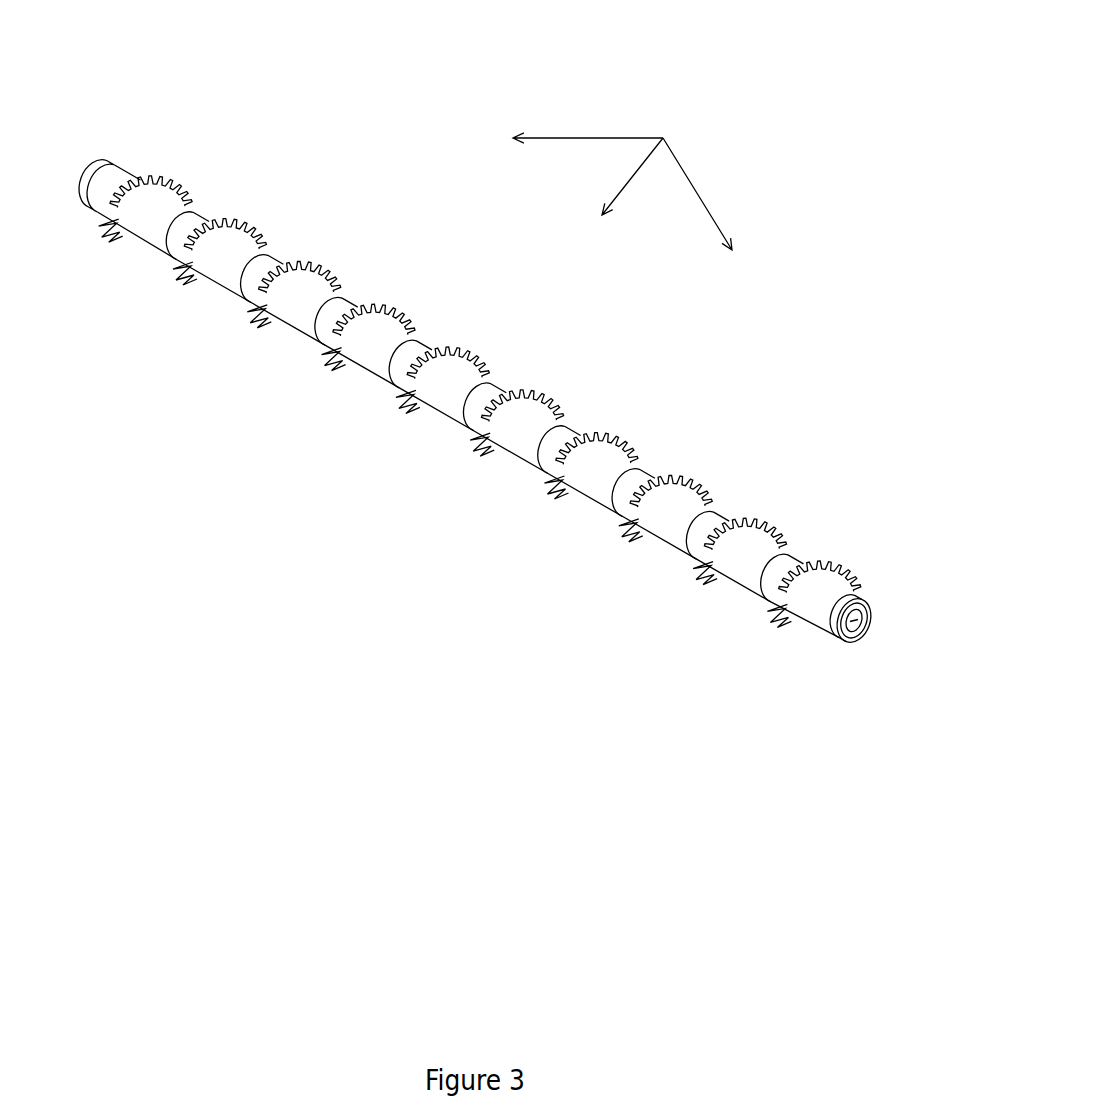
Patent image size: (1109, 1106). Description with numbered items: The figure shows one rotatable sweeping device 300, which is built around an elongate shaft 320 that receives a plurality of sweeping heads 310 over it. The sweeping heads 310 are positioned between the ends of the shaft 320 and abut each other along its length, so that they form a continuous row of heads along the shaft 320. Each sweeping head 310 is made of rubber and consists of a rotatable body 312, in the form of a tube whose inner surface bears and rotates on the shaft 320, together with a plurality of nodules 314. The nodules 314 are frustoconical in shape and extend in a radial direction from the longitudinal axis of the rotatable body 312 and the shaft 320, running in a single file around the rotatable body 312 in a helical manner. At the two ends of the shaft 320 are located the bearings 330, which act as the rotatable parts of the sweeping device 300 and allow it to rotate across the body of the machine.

The rotatable sweeping device 300 is at (707, 83).
The sweeping head 310 is at (622, 184).
The rotatable body 312 is at (188, 233).
The nodules 314 is at (177, 272).
The shaft 320 is at (868, 617).
The bearings 330 is at (88, 165).